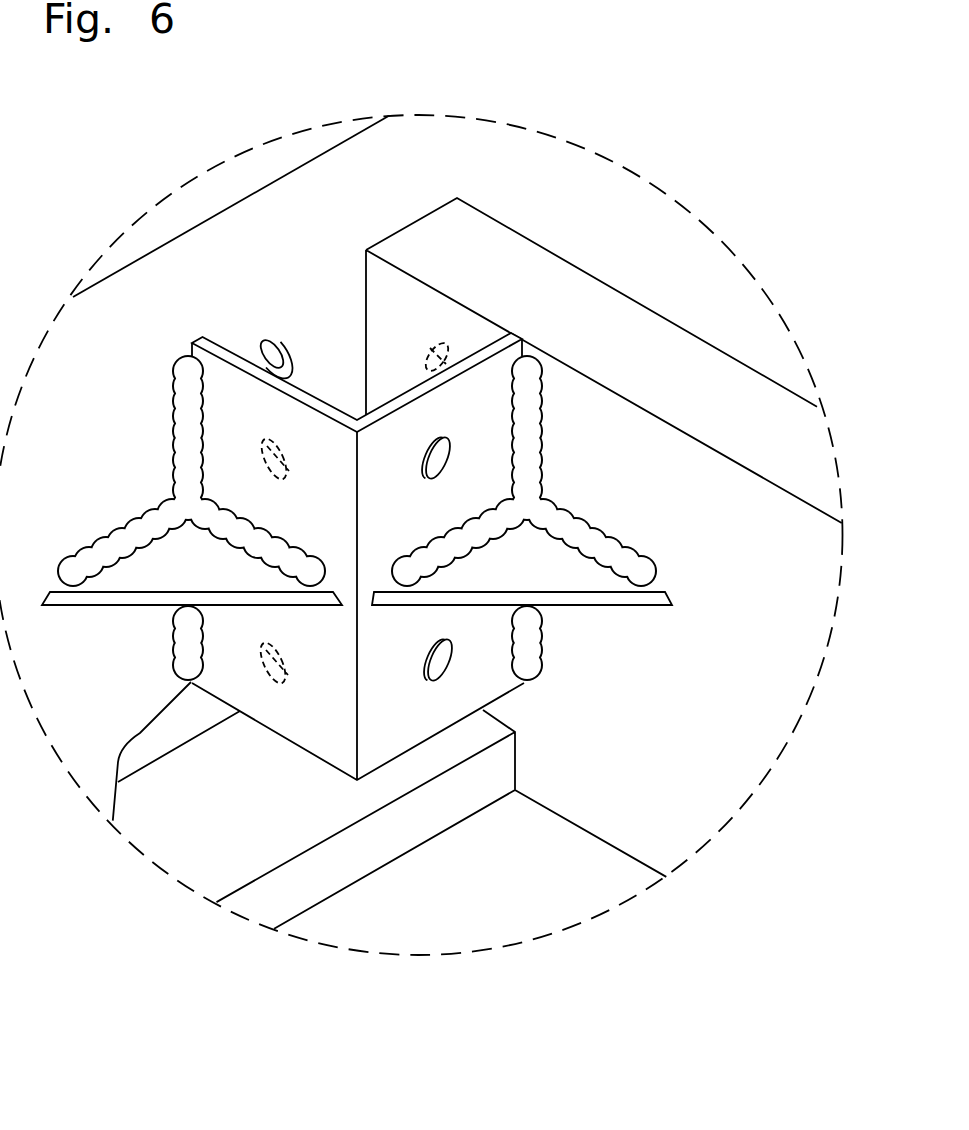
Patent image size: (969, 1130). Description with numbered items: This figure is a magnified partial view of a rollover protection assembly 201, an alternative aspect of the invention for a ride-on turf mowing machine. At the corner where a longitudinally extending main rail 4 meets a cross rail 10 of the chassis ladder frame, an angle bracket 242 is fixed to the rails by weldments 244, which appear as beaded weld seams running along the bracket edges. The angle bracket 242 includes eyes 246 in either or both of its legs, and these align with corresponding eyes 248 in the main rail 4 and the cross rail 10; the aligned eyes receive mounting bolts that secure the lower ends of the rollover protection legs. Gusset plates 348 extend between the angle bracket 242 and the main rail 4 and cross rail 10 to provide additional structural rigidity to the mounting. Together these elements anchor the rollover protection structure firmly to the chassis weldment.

The rollover protection assembly 201 is at (613, 117).
The angle bracket 242 is at (189, 343).
The weldment 244 is at (540, 493).
The eye 246 is at (428, 455).
The eye 248 is at (420, 358).
The gusset plate 348 is at (375, 607).
The main rail 4 is at (97, 480).
The cross rail 10 is at (689, 689).